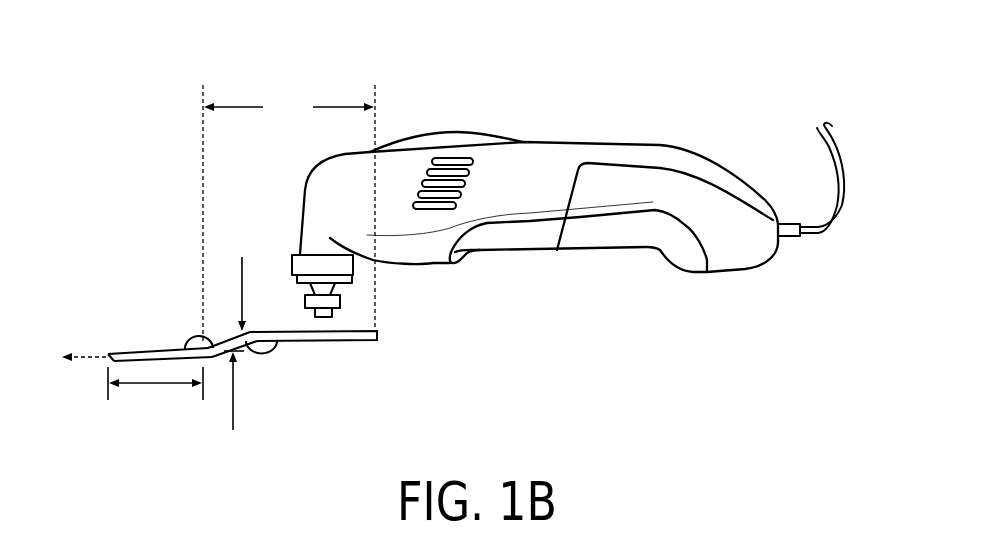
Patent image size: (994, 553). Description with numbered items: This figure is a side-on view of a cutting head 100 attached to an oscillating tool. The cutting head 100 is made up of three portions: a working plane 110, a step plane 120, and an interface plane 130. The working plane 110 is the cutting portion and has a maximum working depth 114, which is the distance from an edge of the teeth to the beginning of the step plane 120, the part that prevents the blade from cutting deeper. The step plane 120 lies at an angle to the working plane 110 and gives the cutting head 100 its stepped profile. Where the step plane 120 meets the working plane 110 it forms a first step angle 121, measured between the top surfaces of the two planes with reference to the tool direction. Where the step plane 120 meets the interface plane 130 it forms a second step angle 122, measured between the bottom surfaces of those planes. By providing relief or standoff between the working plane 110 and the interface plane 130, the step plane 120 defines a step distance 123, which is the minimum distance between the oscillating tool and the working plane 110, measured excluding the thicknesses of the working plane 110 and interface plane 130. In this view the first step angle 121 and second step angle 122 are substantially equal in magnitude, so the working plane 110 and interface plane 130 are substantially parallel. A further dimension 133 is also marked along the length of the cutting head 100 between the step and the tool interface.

The cutting head 100 is at (122, 62).
The working plane 110 is at (138, 350).
The maximum working depth 114 is at (147, 385).
The step plane 120 is at (235, 333).
The first step angle 121 is at (199, 334).
The second step angle 122 is at (263, 352).
The step distance 123 is at (243, 331).
The interface plane 130 is at (357, 331).
The offset distance 133 is at (289, 214).